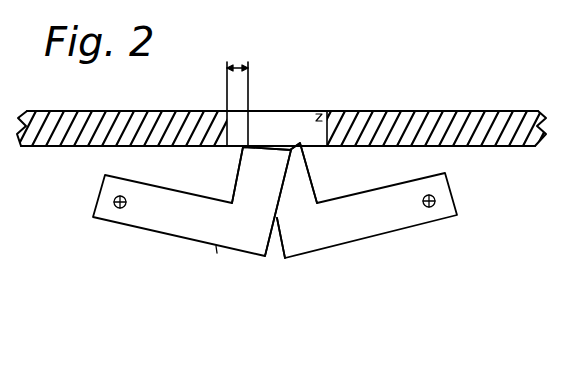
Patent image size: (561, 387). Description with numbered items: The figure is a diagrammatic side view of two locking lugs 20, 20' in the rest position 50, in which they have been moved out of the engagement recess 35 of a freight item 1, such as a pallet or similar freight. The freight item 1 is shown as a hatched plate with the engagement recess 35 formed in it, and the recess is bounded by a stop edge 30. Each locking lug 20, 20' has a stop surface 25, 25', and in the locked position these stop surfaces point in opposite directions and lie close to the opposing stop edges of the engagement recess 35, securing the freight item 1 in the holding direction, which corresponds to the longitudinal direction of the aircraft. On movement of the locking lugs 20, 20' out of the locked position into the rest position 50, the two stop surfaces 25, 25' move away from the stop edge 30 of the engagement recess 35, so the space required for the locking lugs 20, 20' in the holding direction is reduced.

The freight item 1 is at (468, 111).
The locking lug 20 is at (367, 229).
The locking lug 20' is at (192, 226).
The stop surface 25 is at (327, 200).
The stop surface 25' is at (235, 201).
The stop edge 30 is at (233, 136).
The engagement recess 35 is at (279, 80).
The rest position 50 is at (271, 290).